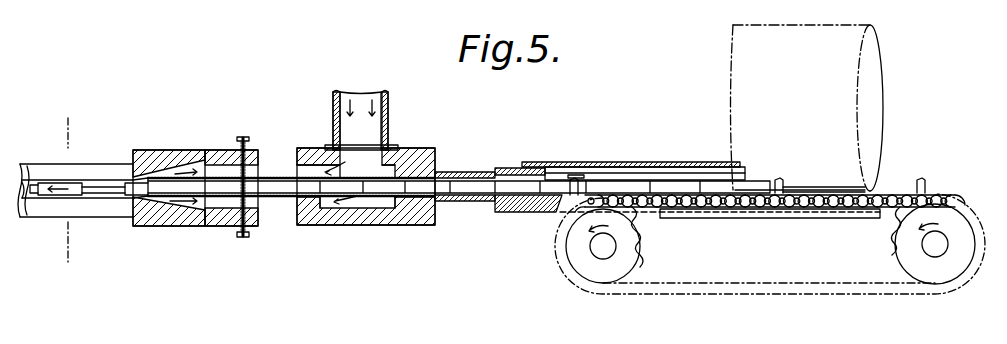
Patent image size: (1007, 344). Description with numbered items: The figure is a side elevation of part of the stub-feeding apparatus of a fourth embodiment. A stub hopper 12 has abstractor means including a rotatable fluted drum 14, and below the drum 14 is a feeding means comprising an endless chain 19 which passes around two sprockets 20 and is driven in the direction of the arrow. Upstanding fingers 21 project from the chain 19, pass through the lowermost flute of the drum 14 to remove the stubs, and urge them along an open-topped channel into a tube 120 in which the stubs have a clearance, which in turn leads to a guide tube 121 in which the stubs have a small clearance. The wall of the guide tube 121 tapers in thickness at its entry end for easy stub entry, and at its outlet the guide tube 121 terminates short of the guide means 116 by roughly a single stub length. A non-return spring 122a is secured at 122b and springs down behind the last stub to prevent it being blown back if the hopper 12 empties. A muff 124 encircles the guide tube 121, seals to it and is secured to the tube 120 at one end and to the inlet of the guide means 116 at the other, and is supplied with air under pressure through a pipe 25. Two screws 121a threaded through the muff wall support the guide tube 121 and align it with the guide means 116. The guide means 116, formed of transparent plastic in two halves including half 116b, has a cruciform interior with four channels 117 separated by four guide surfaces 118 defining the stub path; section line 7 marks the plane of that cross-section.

The section line 7- 7 is at (68, 130).
The guide means 116 is at (100, 164).
The half of guide means 116b is at (145, 164).
The channels 117 is at (38, 183).
The guide surfaces 118 is at (24, 200).
The screws 121a is at (238, 238).
The muff 124 is at (312, 152).
The guide tube 121 is at (312, 208).
The pipe 25 is at (390, 132).
The tube 120 is at (470, 205).
The non-return spring 122a is at (575, 175).
The securing point of non-return spring 122b is at (680, 170).
The fingers 21 is at (575, 178).
The endless chain 19 is at (560, 266).
The sprockets 20 is at (572, 246).
The fluted drum 14 is at (872, 117).
The stub hopper 12 is at (906, 148).